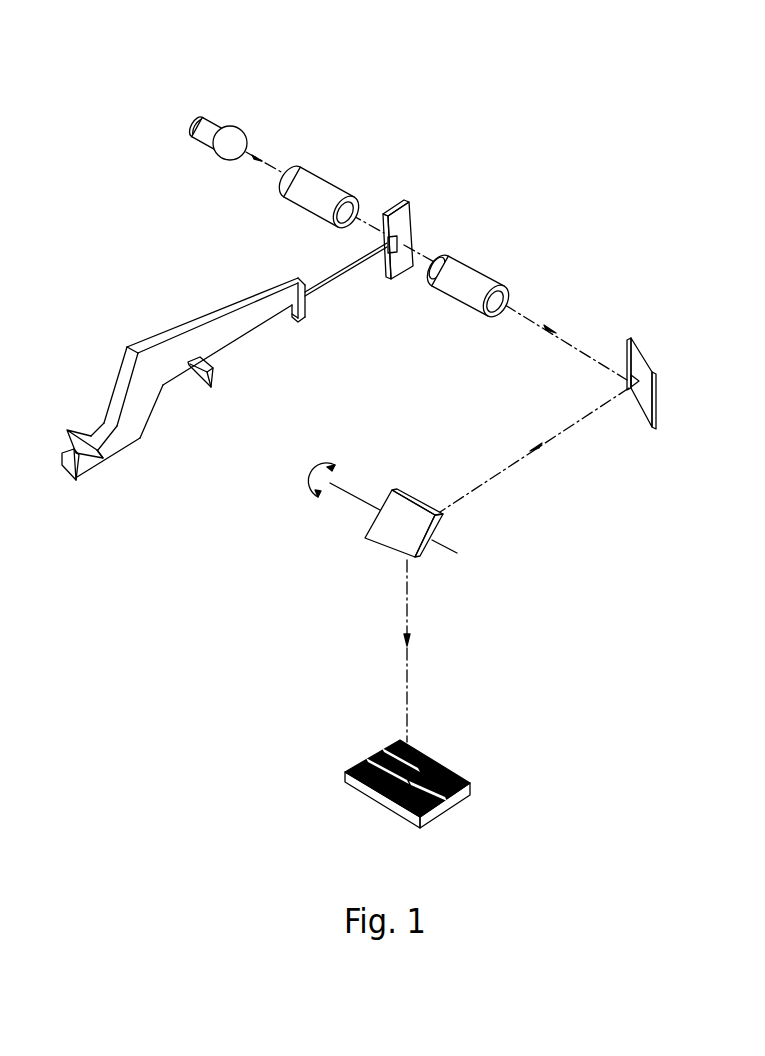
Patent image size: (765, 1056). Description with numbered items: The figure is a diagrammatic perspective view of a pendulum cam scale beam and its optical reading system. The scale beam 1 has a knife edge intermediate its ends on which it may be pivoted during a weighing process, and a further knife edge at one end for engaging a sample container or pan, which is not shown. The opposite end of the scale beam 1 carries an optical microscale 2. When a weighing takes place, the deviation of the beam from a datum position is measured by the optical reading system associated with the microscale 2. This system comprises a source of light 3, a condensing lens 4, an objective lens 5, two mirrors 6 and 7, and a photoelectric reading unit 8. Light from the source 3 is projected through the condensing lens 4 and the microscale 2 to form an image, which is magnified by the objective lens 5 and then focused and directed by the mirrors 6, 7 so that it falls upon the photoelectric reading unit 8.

The scale beam 1 is at (178, 343).
The optical microscale 2 is at (408, 220).
The source of light 3 is at (233, 143).
The condensing lens 4 is at (317, 187).
The objective lens 5 is at (497, 265).
The mirror 6 is at (632, 340).
The mirror 7 is at (413, 547).
The photoelectric reading unit 8 is at (365, 762).